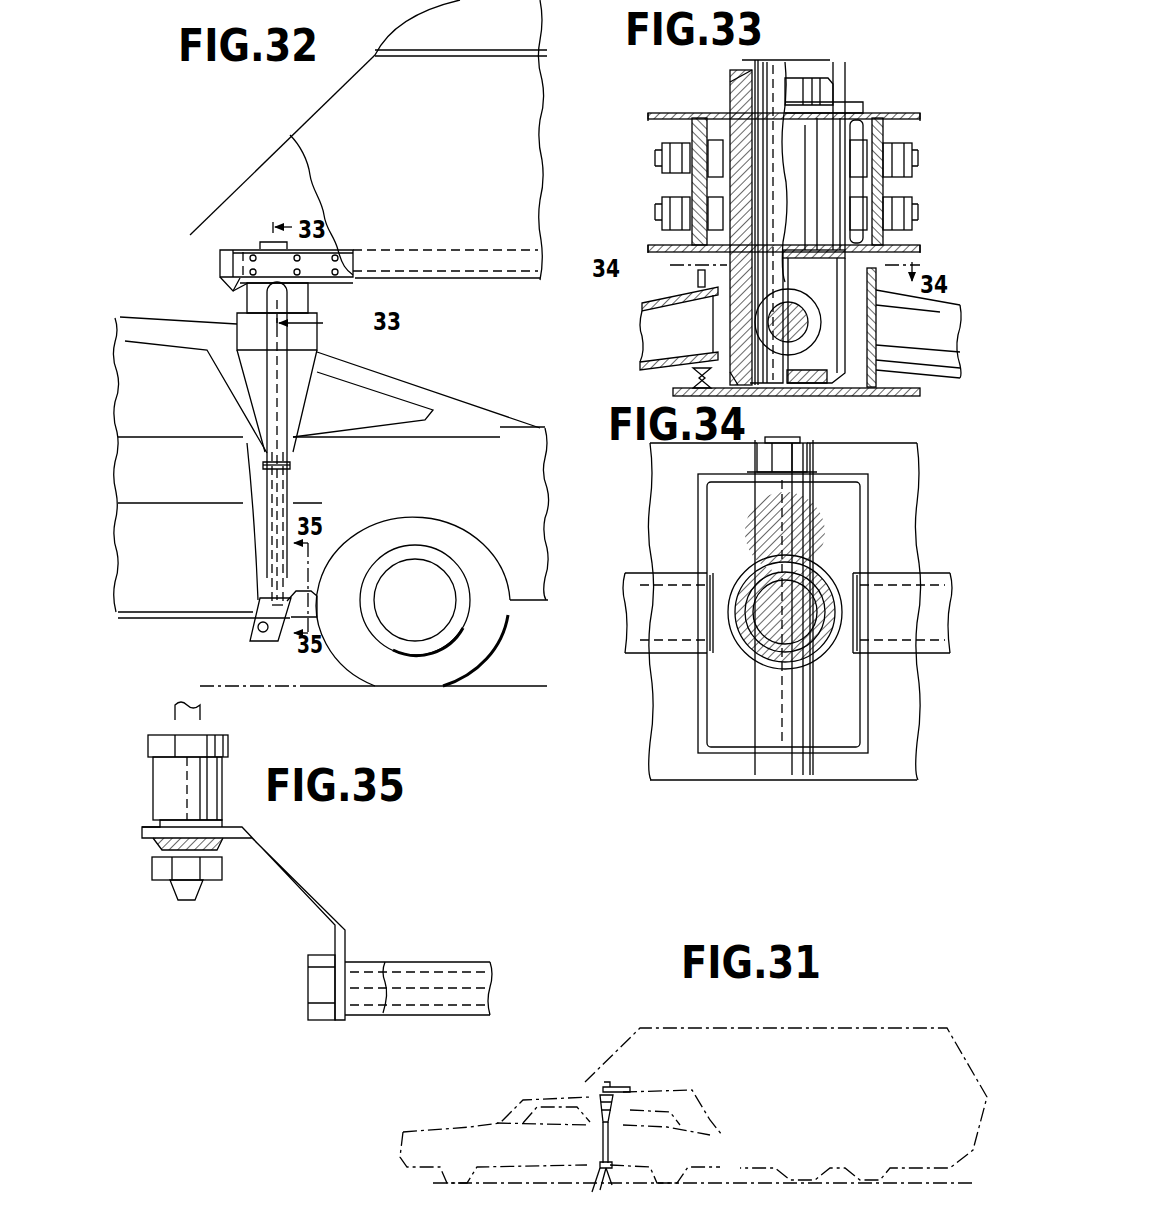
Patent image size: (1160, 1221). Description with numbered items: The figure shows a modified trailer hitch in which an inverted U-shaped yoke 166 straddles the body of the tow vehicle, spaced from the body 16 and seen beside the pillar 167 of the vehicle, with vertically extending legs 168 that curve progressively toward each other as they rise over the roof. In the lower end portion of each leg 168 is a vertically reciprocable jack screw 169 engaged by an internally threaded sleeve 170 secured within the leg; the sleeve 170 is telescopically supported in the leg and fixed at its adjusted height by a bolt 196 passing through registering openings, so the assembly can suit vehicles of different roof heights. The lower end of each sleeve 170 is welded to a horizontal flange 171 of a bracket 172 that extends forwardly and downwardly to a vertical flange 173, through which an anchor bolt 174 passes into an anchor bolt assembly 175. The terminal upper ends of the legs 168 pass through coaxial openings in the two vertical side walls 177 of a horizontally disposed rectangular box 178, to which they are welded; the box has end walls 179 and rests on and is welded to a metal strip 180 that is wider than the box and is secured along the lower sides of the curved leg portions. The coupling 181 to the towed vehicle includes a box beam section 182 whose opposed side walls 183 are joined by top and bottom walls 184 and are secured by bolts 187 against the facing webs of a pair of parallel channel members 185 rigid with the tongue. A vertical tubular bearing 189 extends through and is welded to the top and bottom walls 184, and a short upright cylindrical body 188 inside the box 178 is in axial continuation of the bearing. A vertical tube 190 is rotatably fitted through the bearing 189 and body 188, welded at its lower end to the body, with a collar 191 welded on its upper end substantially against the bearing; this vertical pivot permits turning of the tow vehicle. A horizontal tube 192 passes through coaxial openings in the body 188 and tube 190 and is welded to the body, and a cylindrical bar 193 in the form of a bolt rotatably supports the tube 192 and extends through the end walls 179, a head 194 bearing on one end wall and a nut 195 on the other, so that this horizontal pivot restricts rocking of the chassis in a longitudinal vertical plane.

In FIG. 32, the vehicle body 16 is at (330, 501).
In FIG. 32, the inverted U-shaped yoke 166 is at (265, 410).
In FIG. 33, the inverted U-shaped yoke 166 is at (646, 301).
In FIG. 31, the inverted U-shaped yoke 166 is at (613, 1139).
In FIG. 32, the pillar 167 is at (437, 396).
In FIG. 32, the legs 168 is at (280, 488).
In FIG. 33, the legs 168 is at (641, 340).
In FIG. 34, the legs 168 is at (670, 653).
In FIG. 35, the legs 168 is at (228, 743).
In FIG. 35, the jack screw 169 is at (200, 705).
In FIG. 35, the internally threaded sleeve 170 is at (168, 783).
In FIG. 32, the horizontal flange 171 is at (298, 596).
In FIG. 35, the horizontal flange 171 is at (153, 842).
In FIG. 32, the bracket 172 is at (263, 616).
In FIG. 35, the bracket 172 is at (301, 879).
In FIG. 31, the bracket 172 is at (612, 1180).
In FIG. 35, the vertical flange 173 is at (346, 948).
In FIG. 32, the anchor bolt 174 is at (258, 626).
In FIG. 35, the anchor bolt 174 is at (313, 984).
In FIG. 31, the anchor bolt 174 is at (579, 1187).
In FIG. 35, the anchor bolt assembly 175 is at (460, 958).
In FIG. 32, the vertical side walls 177 is at (305, 300).
In FIG. 34, the vertical side walls 177 is at (707, 508).
In FIG. 32, the rectangular box 178 is at (253, 290).
In FIG. 33, the rectangular box 178 is at (879, 321).
In FIG. 34, the rectangular box 178 is at (873, 549).
In FIG. 34, the end walls 179 is at (728, 750).
In FIG. 32, the metal strip 180 is at (310, 337).
In FIG. 33, the metal strip 180 is at (905, 397).
In FIG. 34, the metal strip 180 is at (903, 495).
In FIG. 32, the coupling 181 is at (259, 246).
In FIG. 33, the coupling 181 is at (903, 256).
In FIG. 31, the coupling 181 is at (616, 1086).
In FIG. 33, the box beam section 182 is at (855, 111).
In FIG. 33, the side walls 183 is at (698, 130).
In FIG. 33, the top and bottom walls 184 is at (842, 117).
In FIG. 33, the channel members 185 is at (877, 185).
In FIG. 33, the bolts 187 is at (910, 158).
In FIG. 33, the cylindrical body 188 is at (752, 318).
In FIG. 33, the vertical tubular bearing 189 is at (799, 128).
In FIG. 34, the vertical tubular bearing 189 is at (748, 645).
In FIG. 33, the vertical tube 190 is at (750, 192).
In FIG. 34, the vertical tube 190 is at (807, 577).
In FIG. 33, the collar 191 is at (737, 100).
In FIG. 34, the horizontal tube 192 is at (803, 683).
In FIG. 33, the cylindrical bar 193 is at (786, 330).
In FIG. 34, the cylindrical bar 193 is at (800, 437).
In FIG. 34, the head 194 is at (812, 773).
In FIG. 34, the nut 195 is at (767, 459).
In FIG. 32, the bolt 196 is at (287, 463).